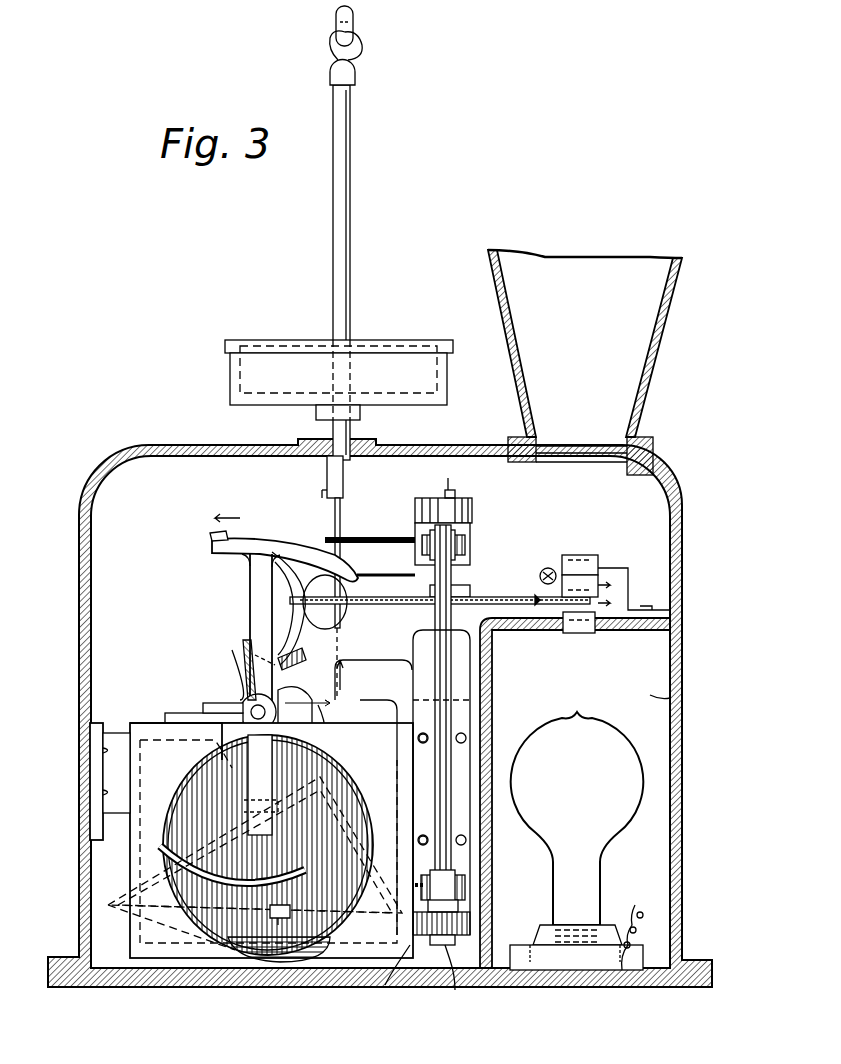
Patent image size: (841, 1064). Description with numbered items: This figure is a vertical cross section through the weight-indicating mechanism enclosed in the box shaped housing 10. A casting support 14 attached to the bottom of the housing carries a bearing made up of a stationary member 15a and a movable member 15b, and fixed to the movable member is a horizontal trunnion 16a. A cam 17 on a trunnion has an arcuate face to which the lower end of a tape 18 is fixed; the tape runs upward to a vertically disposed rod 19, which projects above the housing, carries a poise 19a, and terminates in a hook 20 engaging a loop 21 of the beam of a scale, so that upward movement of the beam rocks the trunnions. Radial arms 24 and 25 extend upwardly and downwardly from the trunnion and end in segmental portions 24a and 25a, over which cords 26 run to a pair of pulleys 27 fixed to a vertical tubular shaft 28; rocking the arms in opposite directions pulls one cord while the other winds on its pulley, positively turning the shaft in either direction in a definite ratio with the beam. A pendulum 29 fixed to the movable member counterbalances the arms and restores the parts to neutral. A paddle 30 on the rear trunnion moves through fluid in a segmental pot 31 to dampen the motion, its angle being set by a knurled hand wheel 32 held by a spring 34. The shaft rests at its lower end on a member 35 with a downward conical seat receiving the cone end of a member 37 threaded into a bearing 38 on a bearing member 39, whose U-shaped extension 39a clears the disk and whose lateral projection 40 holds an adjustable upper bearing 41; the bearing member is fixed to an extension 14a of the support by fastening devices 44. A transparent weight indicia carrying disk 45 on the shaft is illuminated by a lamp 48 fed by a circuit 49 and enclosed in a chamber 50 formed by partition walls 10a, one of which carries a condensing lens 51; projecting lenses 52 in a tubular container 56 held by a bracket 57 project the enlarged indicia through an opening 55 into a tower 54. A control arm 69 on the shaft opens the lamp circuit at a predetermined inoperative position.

The housing 10 is at (88, 462).
The partition walls 10a is at (492, 685).
The casting support 14 is at (140, 733).
The extension of support 14a is at (362, 780).
The stationary member 15a is at (212, 702).
The movable member 15b is at (316, 652).
The trunnion 16a is at (242, 705).
The cam 17 is at (325, 717).
The tape 18 is at (330, 512).
The rod 19 is at (350, 222).
The poise 19a is at (240, 372).
The hook 20 is at (330, 42).
The loop 21 is at (352, 22).
The radial arm 24 is at (245, 580).
The segmental portion 24a is at (212, 548).
The radial arm 25 is at (268, 812).
The segmental portion 25a is at (175, 822).
The cords 26 is at (368, 538).
The pulleys 27 is at (466, 540).
The shaft 28 is at (455, 710).
The pendulum 29 is at (300, 900).
The paddle 30 is at (215, 940).
The segmental pot 31 is at (280, 962).
The knurled hand wheel 32 is at (243, 648).
The spring 34 is at (240, 655).
The member 35 is at (458, 905).
The member 37 is at (467, 983).
The bearing 38 is at (404, 980).
The bearing member 39 is at (420, 686).
The U-shaped extension 39a is at (290, 602).
The lateral projection 40 is at (474, 505).
The bearing 41 is at (448, 490).
The fastening devices 44 is at (422, 838).
The weight indicia carrying member 45 is at (535, 600).
The source of light 48 is at (625, 795).
The circuit 49 is at (622, 970).
The chamber 50 is at (682, 695).
The condensing lens 51 is at (580, 633).
The projecting lenses 52 is at (595, 565).
The tower 54 is at (648, 312).
The opening 55 is at (605, 455).
The tubular container 56 is at (605, 585).
The bracket 57 is at (630, 565).
The control arm 69 is at (470, 590).